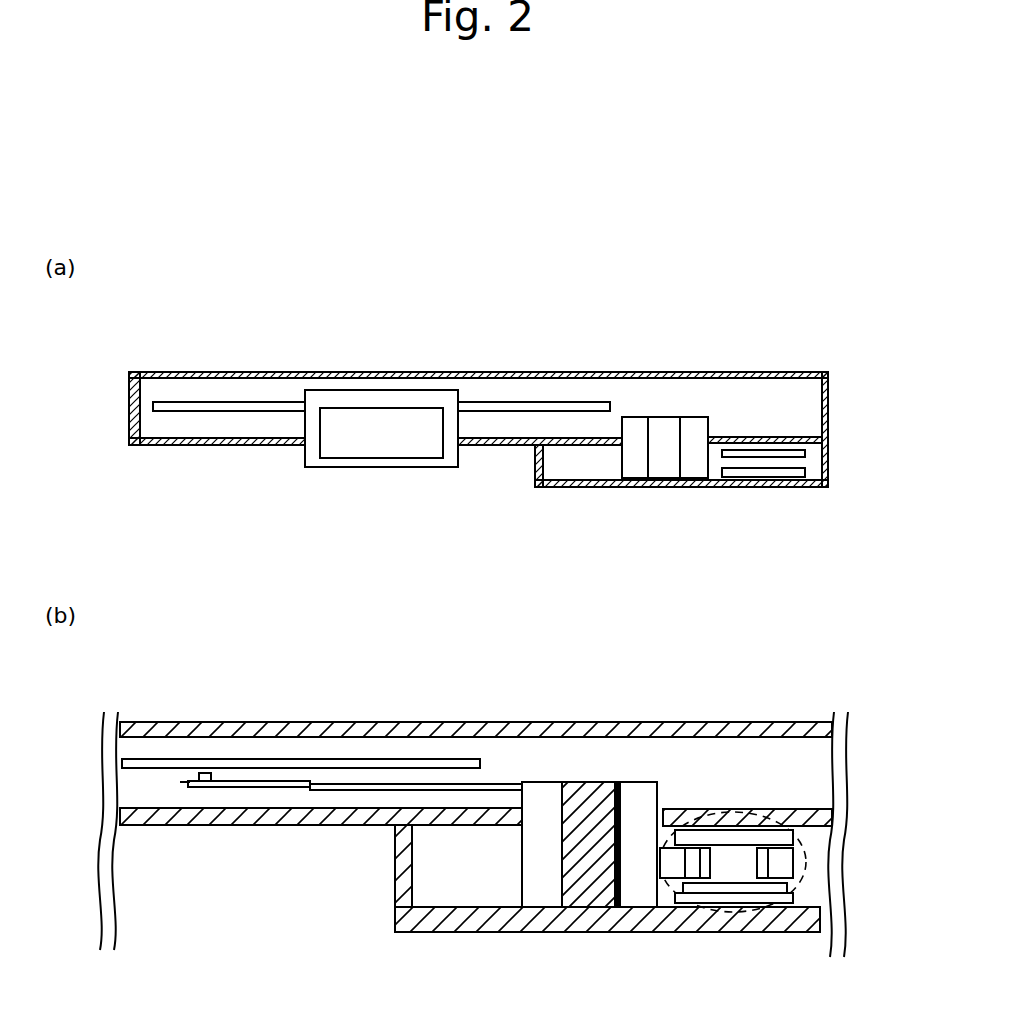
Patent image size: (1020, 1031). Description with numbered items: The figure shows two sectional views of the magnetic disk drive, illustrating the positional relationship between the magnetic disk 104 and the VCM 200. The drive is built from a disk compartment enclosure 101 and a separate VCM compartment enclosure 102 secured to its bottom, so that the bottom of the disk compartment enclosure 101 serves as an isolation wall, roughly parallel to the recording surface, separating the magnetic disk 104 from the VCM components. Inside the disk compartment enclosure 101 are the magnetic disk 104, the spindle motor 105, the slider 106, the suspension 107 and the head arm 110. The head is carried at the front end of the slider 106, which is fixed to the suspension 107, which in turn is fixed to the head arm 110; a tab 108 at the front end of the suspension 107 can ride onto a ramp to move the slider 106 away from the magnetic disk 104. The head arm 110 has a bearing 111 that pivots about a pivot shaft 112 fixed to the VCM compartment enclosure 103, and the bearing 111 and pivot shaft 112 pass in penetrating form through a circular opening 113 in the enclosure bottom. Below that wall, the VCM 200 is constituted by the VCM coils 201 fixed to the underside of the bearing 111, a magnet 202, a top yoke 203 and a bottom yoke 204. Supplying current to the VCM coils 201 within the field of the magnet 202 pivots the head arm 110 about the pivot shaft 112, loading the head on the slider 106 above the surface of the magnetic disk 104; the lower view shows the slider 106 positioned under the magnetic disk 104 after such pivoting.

The disk compartment enclosure 101 is at (127, 415).
The VCM compartment enclosure 102 is at (537, 481).
The VCM compartment enclosure 103 is at (415, 371).
The magnetic disk 104 is at (246, 404).
The spindle motor 105 is at (330, 394).
The slider 106 is at (205, 773).
The suspension 107 is at (258, 789).
The tab 108 is at (180, 782).
The head arm 110 is at (518, 782).
The bearing 111 is at (638, 416).
The pivot shaft 112 is at (665, 471).
The opening 113 is at (710, 434).
The VCM 200 is at (803, 882).
The VCM coils 201 is at (700, 852).
The magnet 202 is at (790, 471).
The top yoke 203 is at (778, 450).
The bottom yoke 204 is at (748, 479).